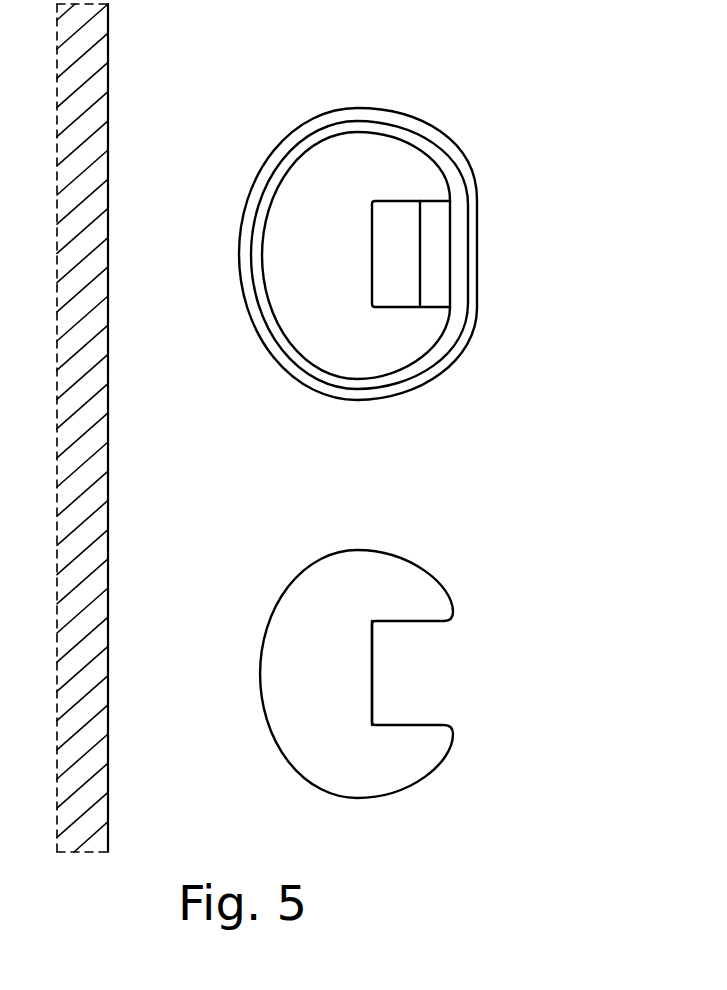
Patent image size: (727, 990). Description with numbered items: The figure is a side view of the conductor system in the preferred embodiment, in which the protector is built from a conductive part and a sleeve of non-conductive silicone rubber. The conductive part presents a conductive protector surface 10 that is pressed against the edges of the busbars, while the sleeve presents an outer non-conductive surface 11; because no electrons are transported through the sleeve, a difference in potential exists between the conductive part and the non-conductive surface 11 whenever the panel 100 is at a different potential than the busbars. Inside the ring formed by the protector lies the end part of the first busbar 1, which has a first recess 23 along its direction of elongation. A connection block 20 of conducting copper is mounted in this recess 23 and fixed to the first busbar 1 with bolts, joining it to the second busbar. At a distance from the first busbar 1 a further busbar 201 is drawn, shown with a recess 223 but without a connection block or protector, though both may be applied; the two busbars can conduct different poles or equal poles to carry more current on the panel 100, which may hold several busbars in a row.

The first busbar 1 is at (343, 192).
The conductive protector surface 10 is at (405, 227).
The non-conductive surface 11 is at (454, 160).
The connection block 20 is at (485, 276).
The first recess 23 is at (432, 262).
The panel 100 is at (108, 110).
The further busbar 201 is at (315, 625).
The notch 223 is at (402, 676).